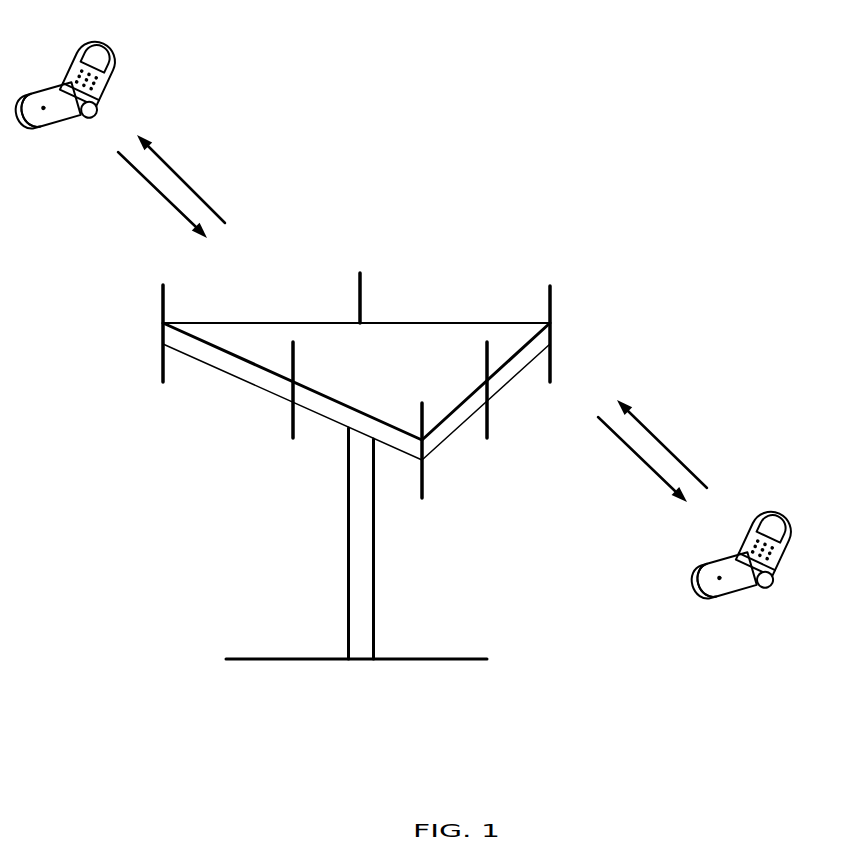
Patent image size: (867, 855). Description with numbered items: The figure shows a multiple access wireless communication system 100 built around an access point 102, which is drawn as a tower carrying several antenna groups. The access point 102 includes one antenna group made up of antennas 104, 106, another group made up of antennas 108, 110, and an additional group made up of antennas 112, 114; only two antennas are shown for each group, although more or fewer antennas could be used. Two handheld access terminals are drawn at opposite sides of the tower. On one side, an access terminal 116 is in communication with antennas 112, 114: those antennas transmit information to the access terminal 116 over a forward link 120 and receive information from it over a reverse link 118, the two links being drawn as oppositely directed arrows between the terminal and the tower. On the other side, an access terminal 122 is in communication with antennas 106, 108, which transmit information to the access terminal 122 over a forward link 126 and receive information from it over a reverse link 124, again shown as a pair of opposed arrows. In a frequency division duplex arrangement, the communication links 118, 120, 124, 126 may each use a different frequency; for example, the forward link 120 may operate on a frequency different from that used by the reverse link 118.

The multiple access wireless communication system 100 is at (666, 45).
The access point 102 is at (357, 661).
The antenna 104 is at (552, 296).
The antenna 106 is at (489, 437).
The antenna 108 is at (424, 497).
The antenna 110 is at (292, 437).
The antenna 112 is at (165, 295).
The antenna 114 is at (362, 280).
The access terminal 116 is at (101, 46).
The reverse link 118 is at (179, 175).
The forward link 120 is at (161, 199).
The access terminal 122 is at (786, 515).
The reverse link 124 is at (645, 466).
The forward link 126 is at (663, 443).